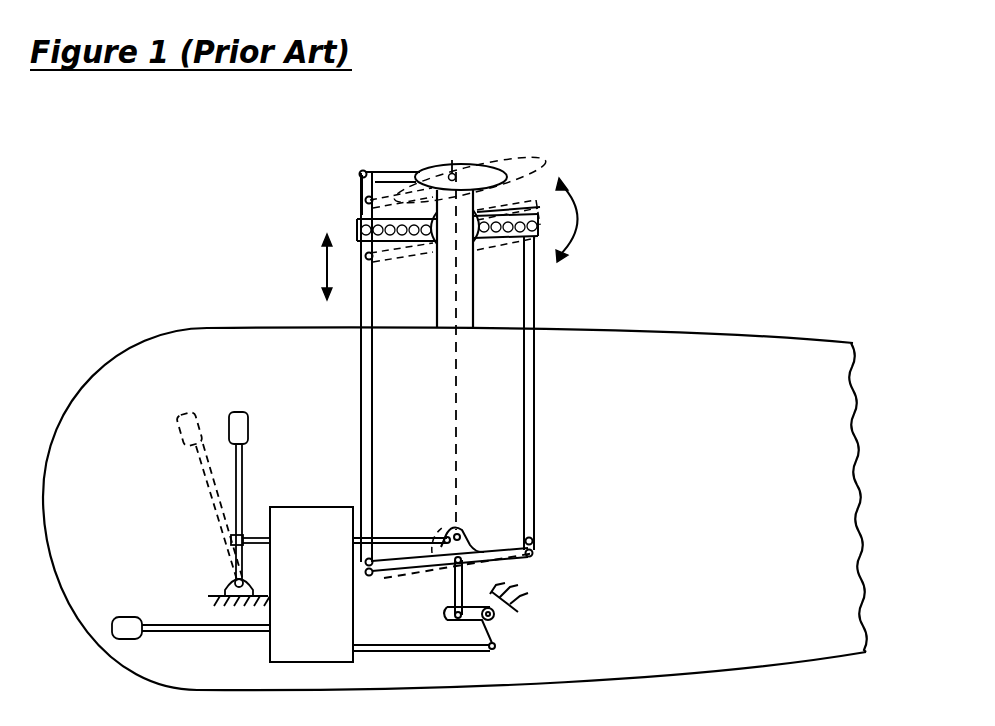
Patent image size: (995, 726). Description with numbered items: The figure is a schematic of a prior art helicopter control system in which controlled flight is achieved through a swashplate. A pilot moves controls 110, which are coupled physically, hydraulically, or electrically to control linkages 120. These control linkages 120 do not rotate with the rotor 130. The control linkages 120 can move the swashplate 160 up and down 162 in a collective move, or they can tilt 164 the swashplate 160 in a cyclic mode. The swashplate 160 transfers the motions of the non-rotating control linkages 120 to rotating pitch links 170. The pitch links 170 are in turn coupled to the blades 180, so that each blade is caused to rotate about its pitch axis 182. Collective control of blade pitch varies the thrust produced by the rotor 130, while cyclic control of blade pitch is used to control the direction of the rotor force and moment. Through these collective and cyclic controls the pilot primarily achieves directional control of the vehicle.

The controls 110 is at (171, 617).
The control linkages 120 is at (537, 458).
The rotor 130 is at (475, 196).
The swashplate 160 is at (357, 220).
The up and down movement 162 is at (322, 263).
The tilt 164 is at (578, 216).
The pitch links 170 is at (364, 190).
The blades 180 is at (530, 175).
The pitch axis 182 is at (450, 176).